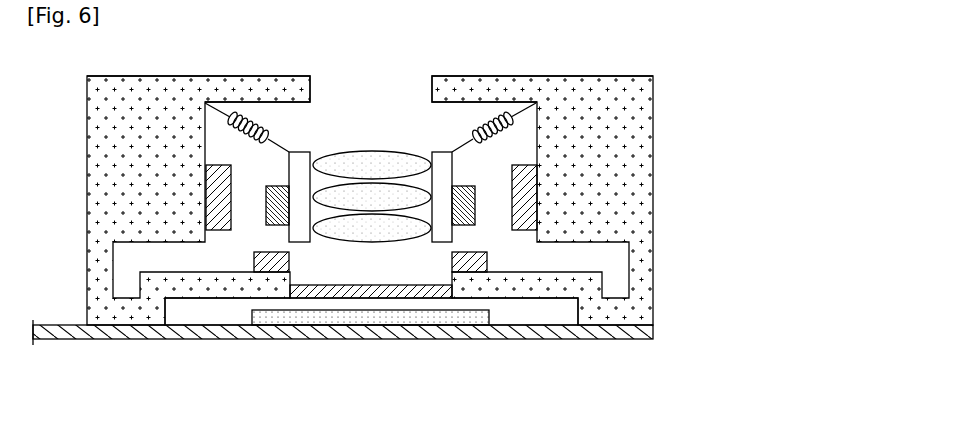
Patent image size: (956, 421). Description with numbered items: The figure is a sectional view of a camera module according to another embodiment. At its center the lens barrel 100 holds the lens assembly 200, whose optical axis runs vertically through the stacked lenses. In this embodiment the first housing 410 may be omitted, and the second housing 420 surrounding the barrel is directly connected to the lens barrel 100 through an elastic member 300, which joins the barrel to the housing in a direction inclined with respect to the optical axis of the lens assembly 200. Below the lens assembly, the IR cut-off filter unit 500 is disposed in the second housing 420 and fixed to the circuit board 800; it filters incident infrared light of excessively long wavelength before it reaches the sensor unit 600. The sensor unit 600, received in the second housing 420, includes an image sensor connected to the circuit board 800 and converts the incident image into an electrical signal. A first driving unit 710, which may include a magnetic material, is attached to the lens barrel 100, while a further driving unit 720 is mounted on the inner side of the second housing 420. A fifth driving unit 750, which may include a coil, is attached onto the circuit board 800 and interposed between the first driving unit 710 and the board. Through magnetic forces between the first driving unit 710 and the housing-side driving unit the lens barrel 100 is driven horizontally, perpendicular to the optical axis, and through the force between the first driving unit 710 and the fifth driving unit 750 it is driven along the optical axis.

The lens barrel 100 is at (300, 242).
The lens assembly 200 is at (370, 146).
The elastic member (spring) 300 is at (484, 114).
The first housing 410 is at (560, 83).
The second housing 420 is at (654, 189).
The IR cut-off filter unit 500 is at (412, 286).
The sensor unit 600 is at (360, 320).
The first driving unit 710 is at (278, 215).
The driving unit 720 is at (215, 230).
The fifth driving unit 750 is at (254, 261).
The circuit board 800 is at (617, 340).